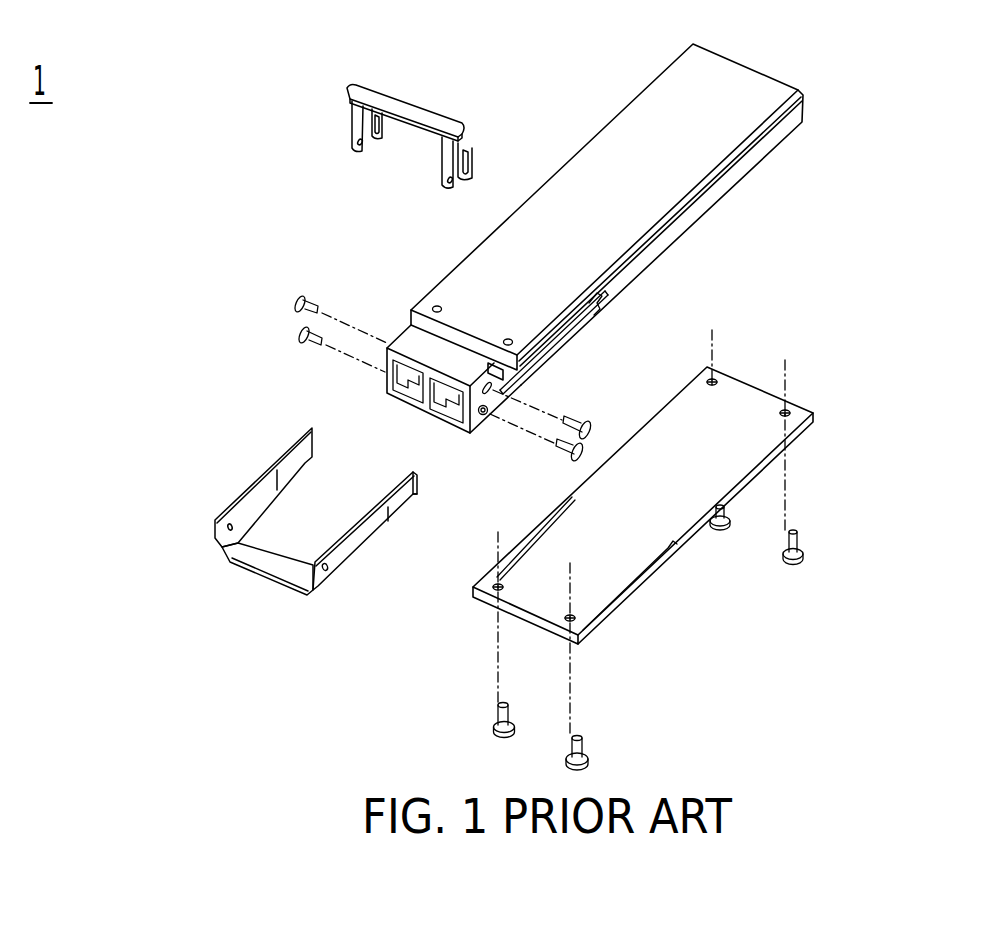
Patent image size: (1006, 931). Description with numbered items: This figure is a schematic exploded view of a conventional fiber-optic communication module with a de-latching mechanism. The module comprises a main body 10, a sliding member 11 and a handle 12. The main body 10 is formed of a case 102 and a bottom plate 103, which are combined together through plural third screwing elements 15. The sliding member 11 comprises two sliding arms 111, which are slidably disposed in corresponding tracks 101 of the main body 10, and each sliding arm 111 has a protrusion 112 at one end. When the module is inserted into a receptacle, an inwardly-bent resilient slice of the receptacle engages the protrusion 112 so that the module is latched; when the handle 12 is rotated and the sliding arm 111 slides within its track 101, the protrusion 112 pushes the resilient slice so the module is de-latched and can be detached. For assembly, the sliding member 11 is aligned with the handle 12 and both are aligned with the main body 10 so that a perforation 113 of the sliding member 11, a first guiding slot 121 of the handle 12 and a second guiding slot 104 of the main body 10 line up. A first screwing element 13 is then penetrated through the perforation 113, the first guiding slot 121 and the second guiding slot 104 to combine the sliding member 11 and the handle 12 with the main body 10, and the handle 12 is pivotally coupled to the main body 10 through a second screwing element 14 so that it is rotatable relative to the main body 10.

The main body 10 is at (905, 225).
The track 101 is at (573, 328).
The case 102 is at (742, 158).
The bottom plate 103 is at (800, 417).
The second guiding slot 104 is at (492, 389).
The sliding member 11 is at (272, 567).
The sliding arm 111 is at (352, 542).
The protrusion 112 is at (417, 498).
The perforation 113 is at (328, 572).
The handle 12 is at (412, 110).
The first guiding slot 121 is at (470, 157).
The first screwing element 13 is at (310, 297).
The second screwing element 14 is at (302, 332).
The third screwing element 15 is at (718, 528).